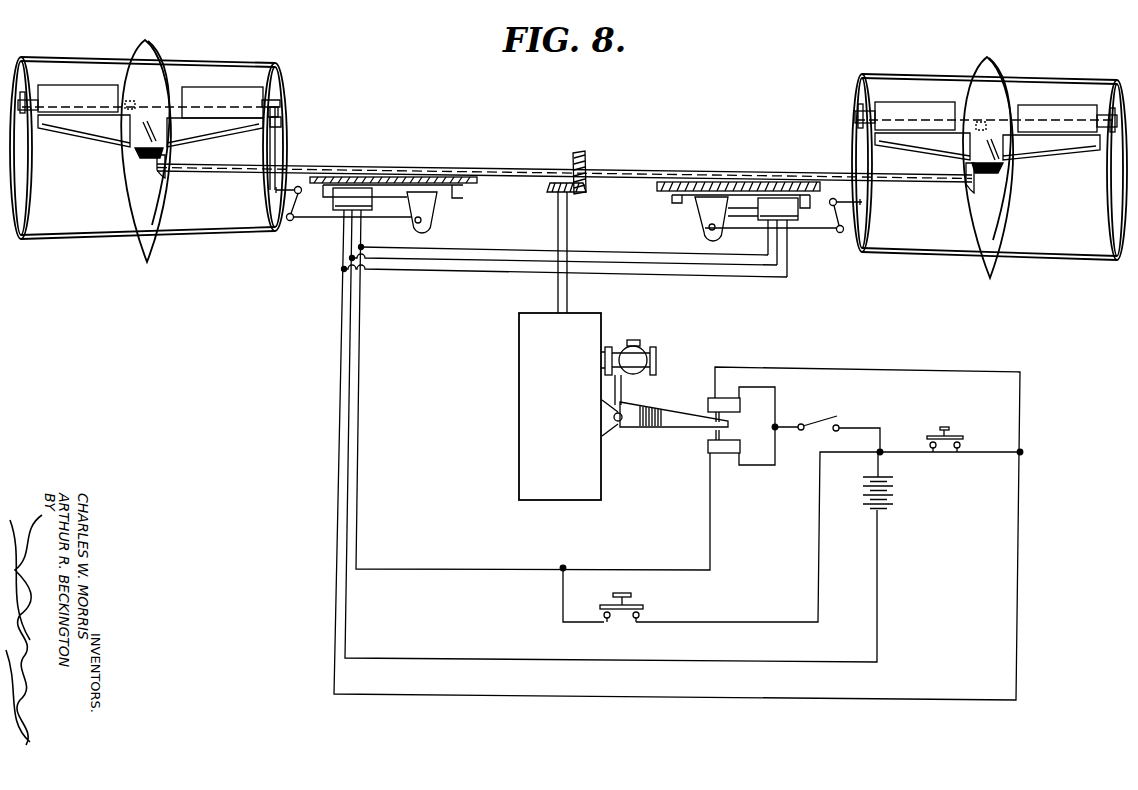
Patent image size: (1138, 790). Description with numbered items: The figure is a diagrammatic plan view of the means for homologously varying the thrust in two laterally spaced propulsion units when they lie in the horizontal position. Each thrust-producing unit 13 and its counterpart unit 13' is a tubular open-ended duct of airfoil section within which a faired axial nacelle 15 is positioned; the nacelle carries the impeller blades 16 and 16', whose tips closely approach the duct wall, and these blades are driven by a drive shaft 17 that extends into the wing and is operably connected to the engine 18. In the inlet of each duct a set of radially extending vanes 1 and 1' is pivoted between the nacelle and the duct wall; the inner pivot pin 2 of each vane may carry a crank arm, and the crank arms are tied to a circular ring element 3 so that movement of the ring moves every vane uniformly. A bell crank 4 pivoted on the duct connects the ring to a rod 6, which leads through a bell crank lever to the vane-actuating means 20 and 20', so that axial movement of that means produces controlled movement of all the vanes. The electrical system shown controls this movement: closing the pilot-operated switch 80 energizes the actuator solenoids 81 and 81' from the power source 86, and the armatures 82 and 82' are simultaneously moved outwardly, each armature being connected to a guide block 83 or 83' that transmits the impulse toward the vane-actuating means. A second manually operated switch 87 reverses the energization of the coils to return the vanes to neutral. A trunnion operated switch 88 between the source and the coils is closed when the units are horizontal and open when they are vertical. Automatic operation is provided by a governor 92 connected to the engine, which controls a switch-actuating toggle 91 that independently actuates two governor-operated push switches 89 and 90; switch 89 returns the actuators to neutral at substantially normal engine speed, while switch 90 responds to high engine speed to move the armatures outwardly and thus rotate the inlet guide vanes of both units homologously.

The inlet guide vane 1 is at (140, 107).
The inlet guide vane of second unit 1' is at (986, 120).
The inner pivot pin 2 is at (281, 103).
The circular ring element 3 is at (279, 115).
The bell crank 4 is at (282, 126).
The rod 6 is at (277, 150).
The thrust-producing unit 13 is at (168, 148).
The second thrust-producing unit 13' is at (958, 167).
The axial nacelle 15 is at (144, 48).
The impeller blades 16 is at (150, 137).
The impeller blades of second unit 16' is at (987, 162).
The drive shaft 17 is at (206, 168).
The engine 18 is at (528, 429).
The vane-actuating means 20 is at (344, 223).
The vane-actuating means of second unit 20' is at (783, 236).
The control switch 80 is at (640, 605).
The actuator solenoid 81 is at (355, 174).
The actuator solenoid of second unit 81' is at (778, 183).
The armature 82 is at (393, 168).
The armature of second unit 82' is at (738, 181).
The guide block 83 is at (438, 212).
The guide block of second unit 83' is at (695, 219).
The power source 86 is at (890, 497).
The second manually operated switch 87 is at (956, 434).
The trunnion operated switch 88 is at (808, 420).
The governor-operated push switch 89 is at (708, 405).
The governor-operated push switch 90 is at (708, 448).
The switch-actuating toggle 91 is at (640, 420).
The governor 92 is at (668, 337).